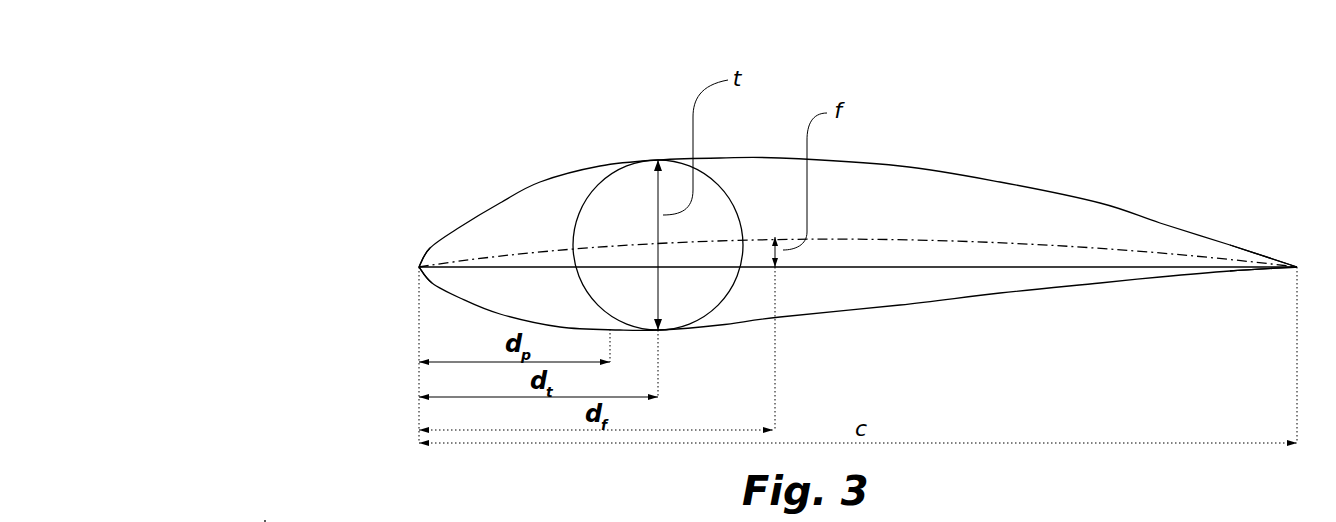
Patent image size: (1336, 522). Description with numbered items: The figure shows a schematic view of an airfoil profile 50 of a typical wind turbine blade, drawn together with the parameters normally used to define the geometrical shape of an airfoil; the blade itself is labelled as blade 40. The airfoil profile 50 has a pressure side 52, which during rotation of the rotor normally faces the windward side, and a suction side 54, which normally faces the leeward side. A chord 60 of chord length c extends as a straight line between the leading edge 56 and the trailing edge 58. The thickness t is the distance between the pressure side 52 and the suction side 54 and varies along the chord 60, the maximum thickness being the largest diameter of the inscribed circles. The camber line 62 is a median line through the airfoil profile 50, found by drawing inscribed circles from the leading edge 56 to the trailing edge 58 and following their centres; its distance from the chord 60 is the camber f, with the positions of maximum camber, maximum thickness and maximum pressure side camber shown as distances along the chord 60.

The blade 40 is at (265, 521).
The airfoil profile 50 is at (832, 68).
The pressure side 52 is at (1032, 297).
The suction side 54 is at (965, 177).
The leading edge 56 is at (418, 266).
The trailing edge 58 is at (1297, 266).
The chord 60 is at (1073, 267).
The camber line 62 is at (847, 238).